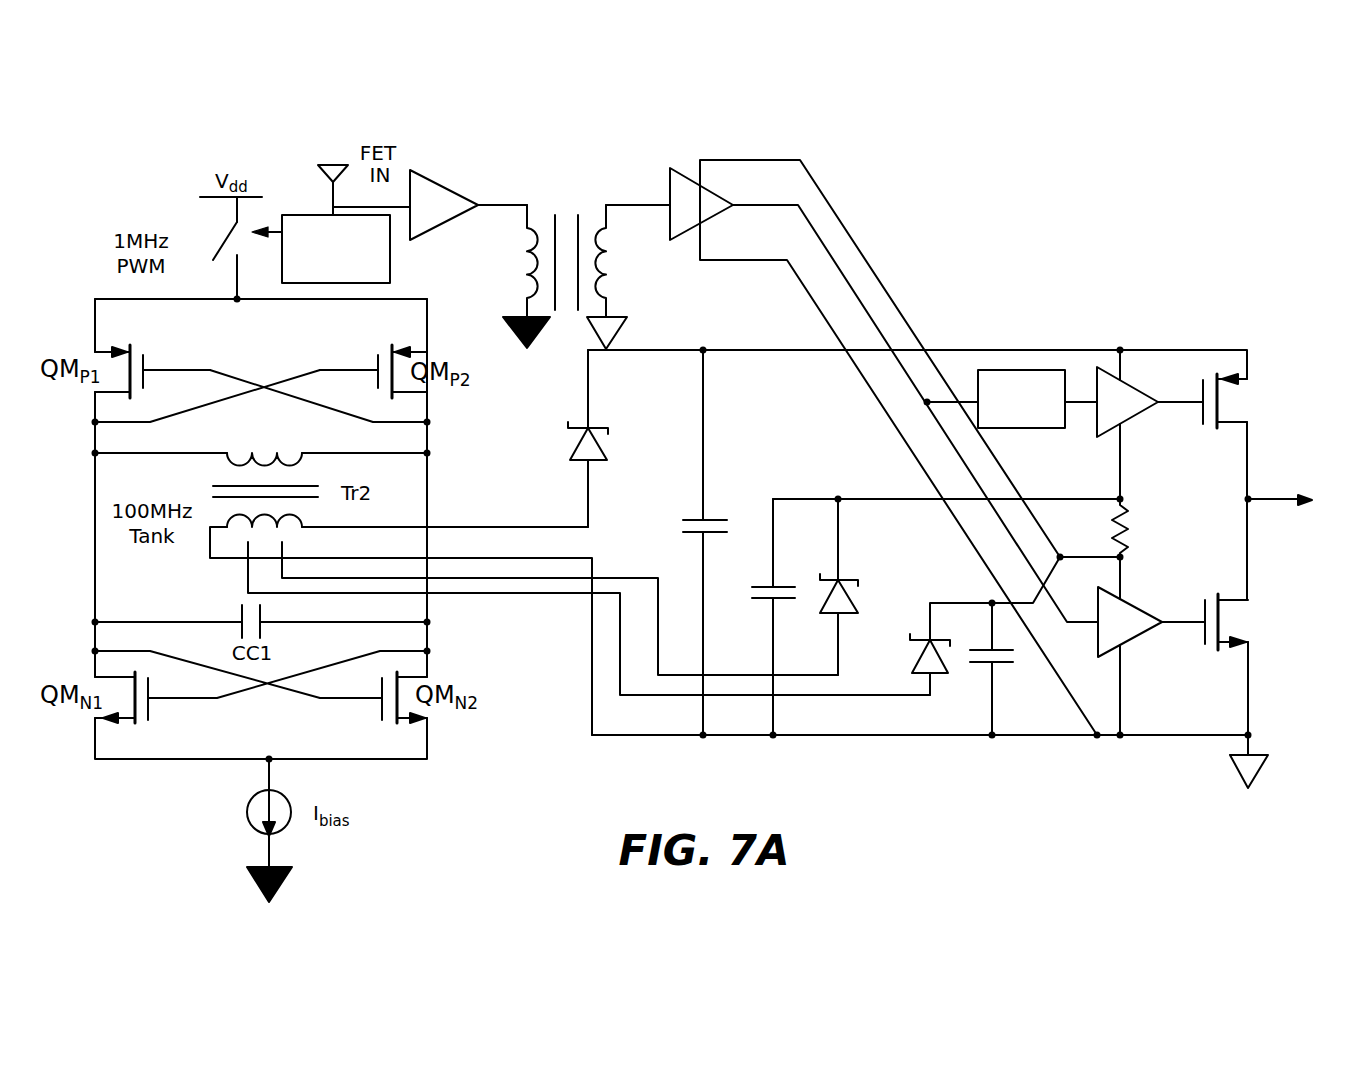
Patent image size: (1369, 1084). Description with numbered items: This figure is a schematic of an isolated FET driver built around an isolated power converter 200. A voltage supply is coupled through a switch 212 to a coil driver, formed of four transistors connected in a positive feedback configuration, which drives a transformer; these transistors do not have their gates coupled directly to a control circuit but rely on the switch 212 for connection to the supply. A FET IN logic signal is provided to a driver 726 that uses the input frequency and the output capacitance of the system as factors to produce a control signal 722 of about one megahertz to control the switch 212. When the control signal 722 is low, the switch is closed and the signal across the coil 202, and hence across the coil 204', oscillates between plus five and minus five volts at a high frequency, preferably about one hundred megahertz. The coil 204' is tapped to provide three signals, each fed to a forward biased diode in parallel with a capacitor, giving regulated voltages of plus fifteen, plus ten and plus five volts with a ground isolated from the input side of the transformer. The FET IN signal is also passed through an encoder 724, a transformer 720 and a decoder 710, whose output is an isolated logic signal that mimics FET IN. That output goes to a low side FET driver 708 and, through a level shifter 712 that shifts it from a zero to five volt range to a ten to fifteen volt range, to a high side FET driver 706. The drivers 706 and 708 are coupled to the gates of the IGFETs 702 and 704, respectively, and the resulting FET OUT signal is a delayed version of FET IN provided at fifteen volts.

The isolated power converter 200 is at (1056, 244).
The coil 202 is at (262, 452).
The coil 204' is at (227, 555).
The switch 212 is at (212, 234).
The IGFET 702 is at (1240, 406).
The IGFET 704 is at (1245, 628).
The high side FET driver 706 is at (1148, 420).
The low side FET driver 708 is at (1148, 645).
The decoder 710 is at (672, 180).
The level shifter 712 is at (1052, 436).
The transformer 720 is at (561, 204).
The control signal 722 is at (273, 232).
The encoder 724 is at (460, 190).
The driver 726 is at (390, 272).